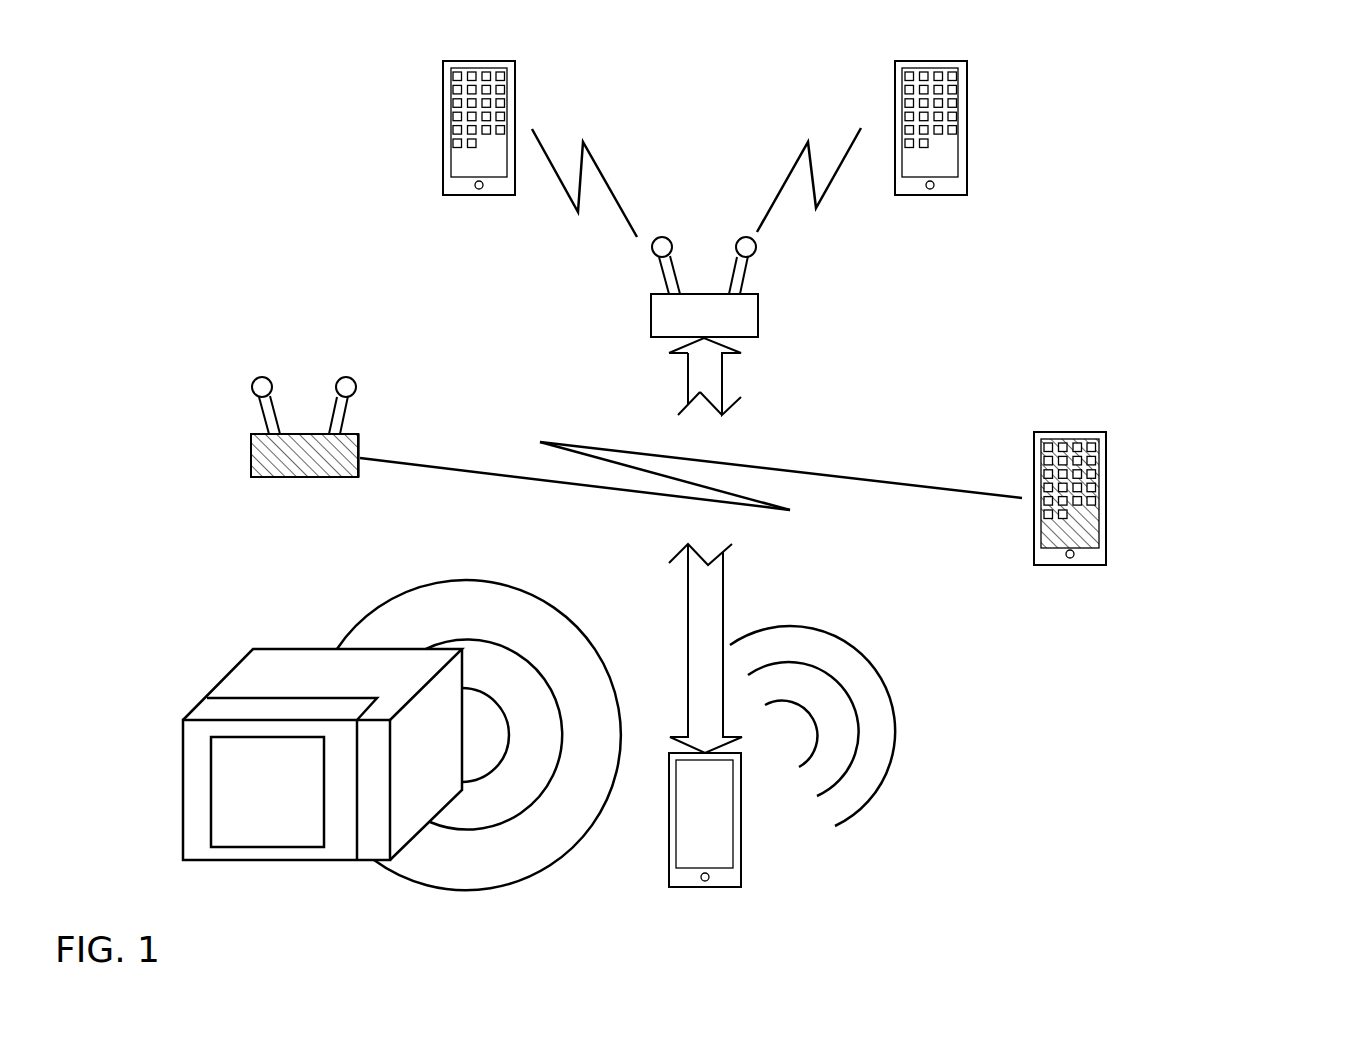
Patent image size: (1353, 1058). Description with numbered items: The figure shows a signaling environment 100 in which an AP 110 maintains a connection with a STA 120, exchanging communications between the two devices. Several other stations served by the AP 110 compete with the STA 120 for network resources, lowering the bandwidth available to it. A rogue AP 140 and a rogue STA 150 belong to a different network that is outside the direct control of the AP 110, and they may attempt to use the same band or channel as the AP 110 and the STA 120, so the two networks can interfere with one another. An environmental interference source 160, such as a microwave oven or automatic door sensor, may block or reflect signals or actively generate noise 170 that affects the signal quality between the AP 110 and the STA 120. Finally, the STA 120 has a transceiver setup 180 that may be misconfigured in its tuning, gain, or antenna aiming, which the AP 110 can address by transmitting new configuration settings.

The signaling environment 100 is at (1262, 116).
The AP 110 is at (758, 312).
The STA 120 is at (703, 888).
The rogue AP 140 is at (251, 450).
The rogue STA 150 is at (1107, 545).
The environmental interference source 160 is at (183, 790).
The noise 170 is at (375, 602).
The transceiver setup 180 is at (888, 727).